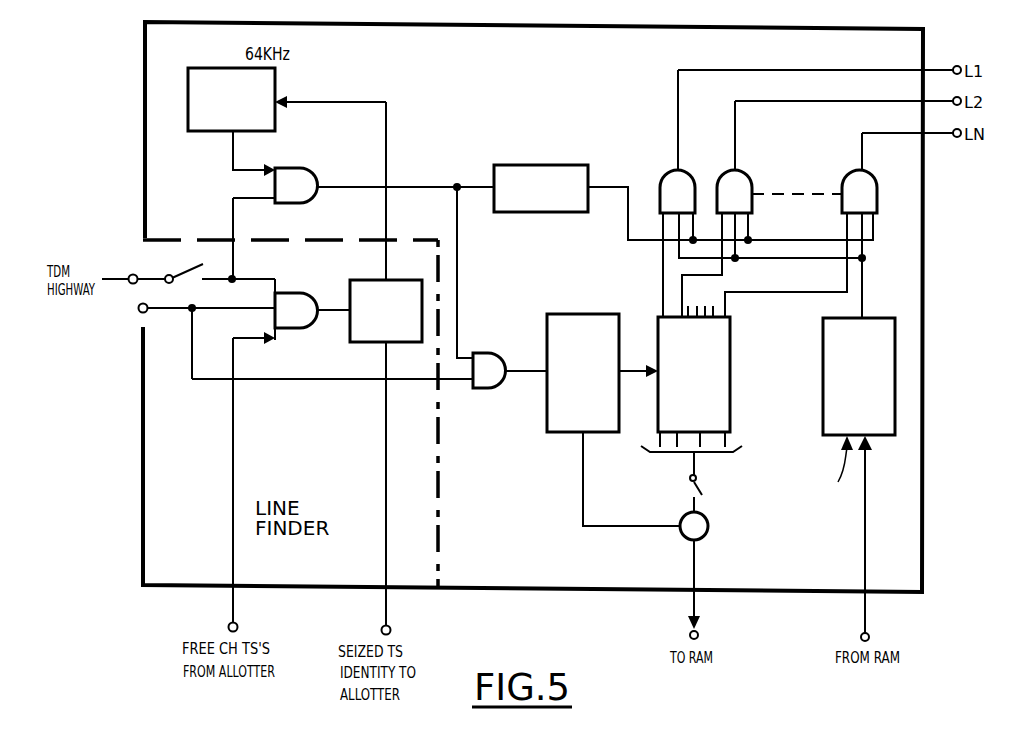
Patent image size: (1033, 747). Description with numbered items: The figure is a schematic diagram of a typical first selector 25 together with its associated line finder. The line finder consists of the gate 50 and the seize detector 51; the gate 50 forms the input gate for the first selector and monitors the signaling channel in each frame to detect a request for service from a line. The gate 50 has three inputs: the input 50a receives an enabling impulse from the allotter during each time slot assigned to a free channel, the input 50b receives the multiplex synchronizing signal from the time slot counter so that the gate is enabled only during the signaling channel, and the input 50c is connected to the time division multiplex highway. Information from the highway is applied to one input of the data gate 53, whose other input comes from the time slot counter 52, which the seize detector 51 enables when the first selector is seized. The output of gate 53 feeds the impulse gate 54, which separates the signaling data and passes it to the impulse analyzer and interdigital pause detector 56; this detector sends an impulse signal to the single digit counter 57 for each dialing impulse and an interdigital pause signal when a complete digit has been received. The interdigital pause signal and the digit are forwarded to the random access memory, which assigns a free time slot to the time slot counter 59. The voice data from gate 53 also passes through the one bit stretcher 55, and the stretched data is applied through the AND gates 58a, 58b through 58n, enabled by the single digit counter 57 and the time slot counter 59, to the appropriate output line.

The first selector 25 is at (145, 101).
The gate 50 is at (298, 292).
The input 50a is at (243, 336).
The input 50b is at (242, 307).
The input 50c is at (217, 277).
The seize detector 51 is at (363, 343).
The time slot counter 52 is at (277, 119).
The data gate 53 is at (313, 203).
The impulse gate 54 is at (505, 388).
The one bit stretcher 55 is at (553, 164).
The impulse analyzer and interdigital pause detector 56 is at (568, 313).
The single digit counter 57 is at (730, 360).
The AND gate 58a is at (668, 170).
The AND gate 58b is at (727, 172).
The AND gate 58n is at (848, 172).
The time slot counter 59 is at (823, 400).